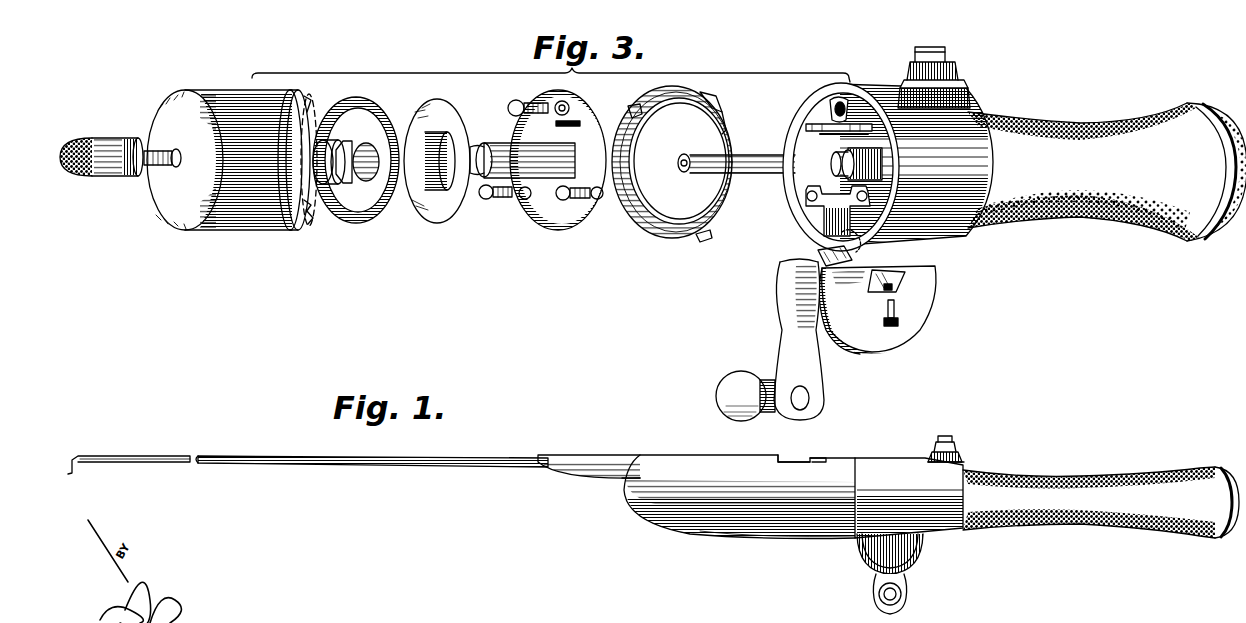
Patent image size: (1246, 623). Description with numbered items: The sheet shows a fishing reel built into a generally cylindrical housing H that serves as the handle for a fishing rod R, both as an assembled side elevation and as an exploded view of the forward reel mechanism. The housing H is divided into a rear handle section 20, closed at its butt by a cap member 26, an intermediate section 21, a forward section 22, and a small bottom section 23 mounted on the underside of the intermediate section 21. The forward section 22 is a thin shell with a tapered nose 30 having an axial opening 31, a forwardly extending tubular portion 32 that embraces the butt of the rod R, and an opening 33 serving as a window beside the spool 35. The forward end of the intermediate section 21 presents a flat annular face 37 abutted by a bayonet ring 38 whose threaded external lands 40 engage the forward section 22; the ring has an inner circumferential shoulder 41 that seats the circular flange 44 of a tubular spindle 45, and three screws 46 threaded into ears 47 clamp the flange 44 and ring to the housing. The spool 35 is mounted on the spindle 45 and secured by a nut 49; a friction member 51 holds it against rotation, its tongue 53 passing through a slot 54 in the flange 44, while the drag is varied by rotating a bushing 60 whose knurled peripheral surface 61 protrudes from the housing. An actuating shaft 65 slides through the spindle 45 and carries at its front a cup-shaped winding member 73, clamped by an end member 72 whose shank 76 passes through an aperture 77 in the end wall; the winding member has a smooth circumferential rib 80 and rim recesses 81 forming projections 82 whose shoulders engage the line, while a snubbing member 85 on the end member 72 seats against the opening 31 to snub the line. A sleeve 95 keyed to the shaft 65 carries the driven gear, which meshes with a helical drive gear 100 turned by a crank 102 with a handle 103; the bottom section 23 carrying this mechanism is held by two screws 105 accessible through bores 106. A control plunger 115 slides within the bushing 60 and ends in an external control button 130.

In FIG. 3, the rear handle section 20 is at (1086, 114).
In FIG. 1, the rear handle section 20 is at (1048, 470).
In FIG. 3, the intermediate section 21 is at (962, 238).
In FIG. 1, the intermediate section 21 is at (880, 458).
In FIG. 1, the forward section 22 is at (698, 455).
In FIG. 3, the bottom section 23 is at (936, 332).
In FIG. 1, the bottom section 23 is at (858, 554).
In FIG. 3, the cap member 26 is at (1228, 104).
In FIG. 1, the cap member 26 is at (1228, 466).
In FIG. 1, the tapered nose 30 is at (632, 510).
In FIG. 1, the axial opening 31 is at (620, 484).
In FIG. 1, the tubular portion 32 is at (572, 477).
In FIG. 1, the opening 33 is at (833, 458).
In FIG. 3, the spool 35 is at (360, 226).
In FIG. 3, the flat annular face 37 is at (812, 110).
In FIG. 3, the bayonet ring 38 is at (654, 242).
In FIG. 3, the external lands 40 is at (632, 110).
In FIG. 3, the inner circumferential shoulder 41 is at (650, 218).
In FIG. 3, the circular flange 44 is at (549, 236).
In FIG. 3, the tubular spindle 45 is at (506, 145).
In FIG. 3, the screws 46 is at (516, 103).
In FIG. 3, the ears 47 is at (850, 100).
In FIG. 3, the nut 49 is at (346, 148).
In FIG. 3, the friction member 51 is at (880, 136).
In FIG. 3, the tongue 53 is at (806, 126).
In FIG. 3, the slot 54 is at (556, 103).
In FIG. 3, the bushing 60 is at (968, 86).
In FIG. 1, the bushing 60 is at (963, 460).
In FIG. 3, the knurled peripheral surface 61 is at (970, 98).
In FIG. 3, the actuating shaft 65 is at (686, 155).
In FIG. 3, the end member 72 is at (112, 178).
In FIG. 3, the winding member 73 is at (212, 232).
In FIG. 3, the shank 76 is at (162, 150).
In FIG. 3, the aperture 77 is at (178, 168).
In FIG. 3, the circumferential rib 80 is at (264, 232).
In FIG. 3, the recesses 81 is at (314, 91).
In FIG. 3, the projections 82 is at (306, 220).
In FIG. 3, the snubbing member 85 is at (92, 138).
In FIG. 3, the sleeve 95 is at (856, 158).
In FIG. 3, the helical drive gear 100 is at (836, 256).
In FIG. 3, the crank 102 is at (782, 340).
In FIG. 3, the handle 103 is at (734, 384).
In FIG. 3, the screws 105 is at (886, 308).
In FIG. 3, the bores 106 is at (900, 286).
In FIG. 3, the control plunger 115 is at (908, 60).
In FIG. 1, the control plunger 115 is at (928, 450).
In FIG. 3, the control button 130 is at (946, 50).
In FIG. 1, the control button 130 is at (948, 440).
In FIG. 1, the fishing rod R is at (466, 458).
In FIG. 1, the housing H is at (708, 540).